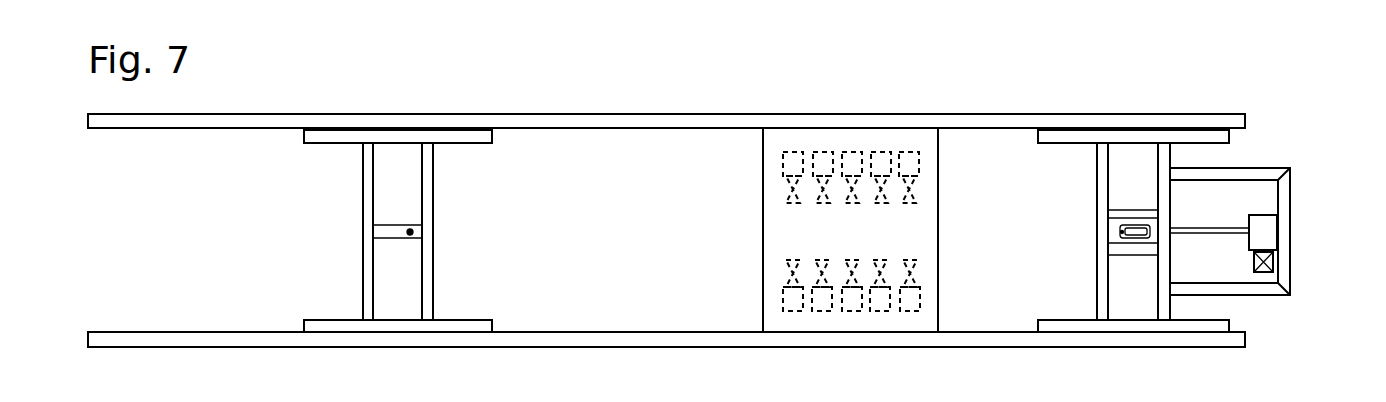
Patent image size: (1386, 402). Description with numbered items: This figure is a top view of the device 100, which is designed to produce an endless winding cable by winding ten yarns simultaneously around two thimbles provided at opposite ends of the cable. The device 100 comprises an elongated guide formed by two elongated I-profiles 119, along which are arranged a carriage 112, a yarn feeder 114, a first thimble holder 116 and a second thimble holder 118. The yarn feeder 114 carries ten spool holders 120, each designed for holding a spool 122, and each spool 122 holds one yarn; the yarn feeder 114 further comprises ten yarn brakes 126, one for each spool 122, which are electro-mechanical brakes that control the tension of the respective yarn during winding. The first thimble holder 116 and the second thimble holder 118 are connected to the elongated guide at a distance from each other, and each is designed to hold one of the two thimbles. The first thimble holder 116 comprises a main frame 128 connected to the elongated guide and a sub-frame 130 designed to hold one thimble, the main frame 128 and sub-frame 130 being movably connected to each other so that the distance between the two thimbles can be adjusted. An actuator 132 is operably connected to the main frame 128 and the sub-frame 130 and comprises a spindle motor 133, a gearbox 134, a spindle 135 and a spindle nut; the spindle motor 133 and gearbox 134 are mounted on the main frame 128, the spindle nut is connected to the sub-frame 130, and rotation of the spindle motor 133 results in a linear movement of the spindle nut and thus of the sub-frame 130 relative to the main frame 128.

The device 100 is at (380, 96).
The carriage 112 is at (902, 136).
The yarn feeder 114 is at (1089, 221).
The first thimble holder 116 is at (1075, 274).
The second thimble holder 118 is at (499, 164).
The elongated I-profiles 119 is at (565, 343).
The spool holders 120 is at (905, 164).
The spool 122 is at (875, 155).
The yarn brakes 126 is at (828, 223).
The main frame 128 is at (1227, 228).
The sub-frame 130 is at (1122, 230).
The actuator 132 is at (1217, 196).
The spindle motor 133 is at (1267, 272).
The gearbox 134 is at (1262, 237).
The spindle 135 is at (1215, 230).